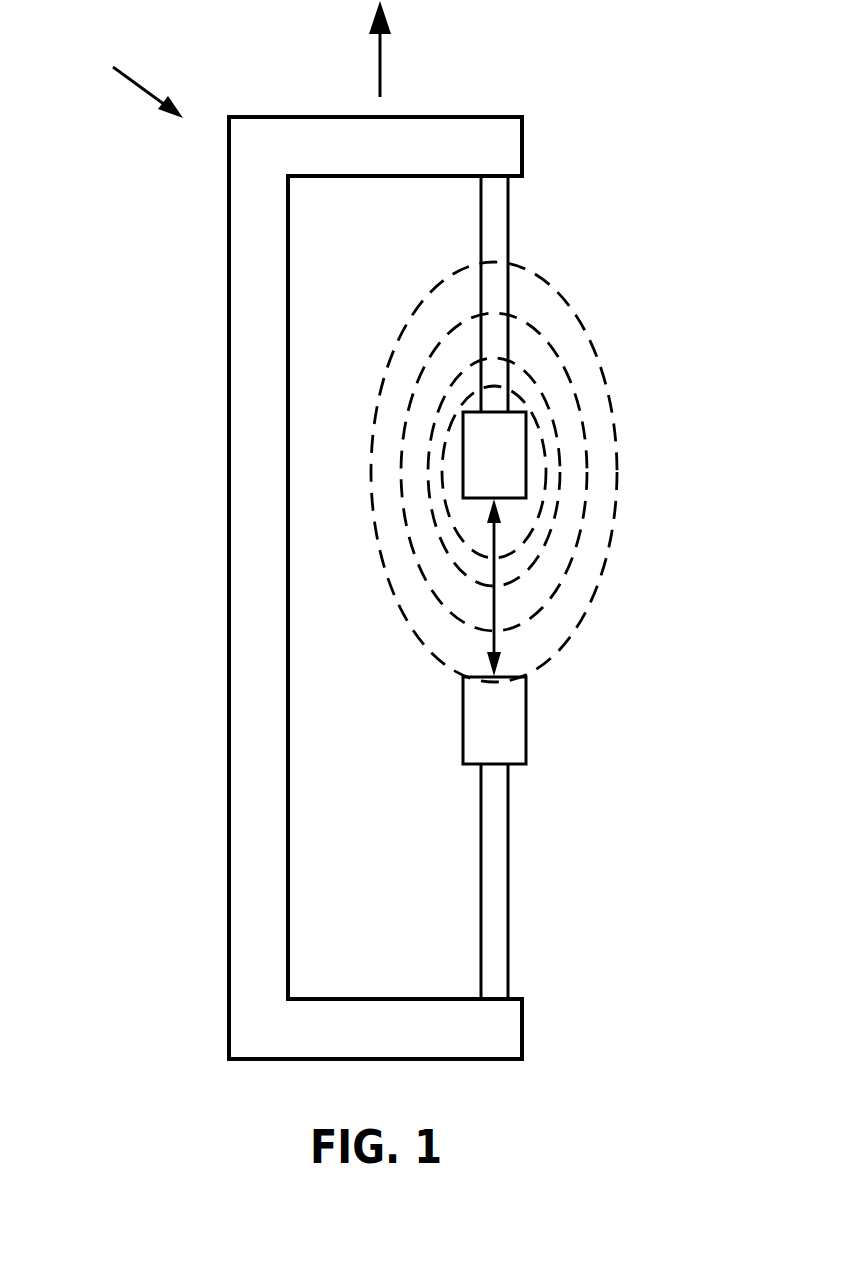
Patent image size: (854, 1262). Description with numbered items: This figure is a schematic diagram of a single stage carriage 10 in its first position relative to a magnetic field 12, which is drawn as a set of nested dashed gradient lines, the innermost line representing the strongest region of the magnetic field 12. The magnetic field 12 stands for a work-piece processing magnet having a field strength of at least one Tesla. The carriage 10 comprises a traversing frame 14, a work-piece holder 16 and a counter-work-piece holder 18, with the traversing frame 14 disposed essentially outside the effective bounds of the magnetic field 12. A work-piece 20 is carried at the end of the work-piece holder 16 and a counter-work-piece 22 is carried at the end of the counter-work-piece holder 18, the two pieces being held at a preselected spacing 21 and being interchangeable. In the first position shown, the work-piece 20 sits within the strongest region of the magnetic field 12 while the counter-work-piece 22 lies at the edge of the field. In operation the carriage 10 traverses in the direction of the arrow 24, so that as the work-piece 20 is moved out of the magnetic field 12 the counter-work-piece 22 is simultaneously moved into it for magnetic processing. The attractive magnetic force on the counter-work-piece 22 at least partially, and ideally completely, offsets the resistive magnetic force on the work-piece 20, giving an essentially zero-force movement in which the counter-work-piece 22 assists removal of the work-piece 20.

The carriage 10 is at (122, 76).
The magnetic field 12 is at (579, 322).
The traversing frame 14 is at (229, 463).
The work-piece holder 16 is at (509, 217).
The counter-work-piece holder 18 is at (509, 885).
The work-piece 20 is at (526, 457).
The preselected spacing 21 is at (494, 573).
The counter-work-piece 22 is at (526, 725).
The arrow 24 is at (381, 62).